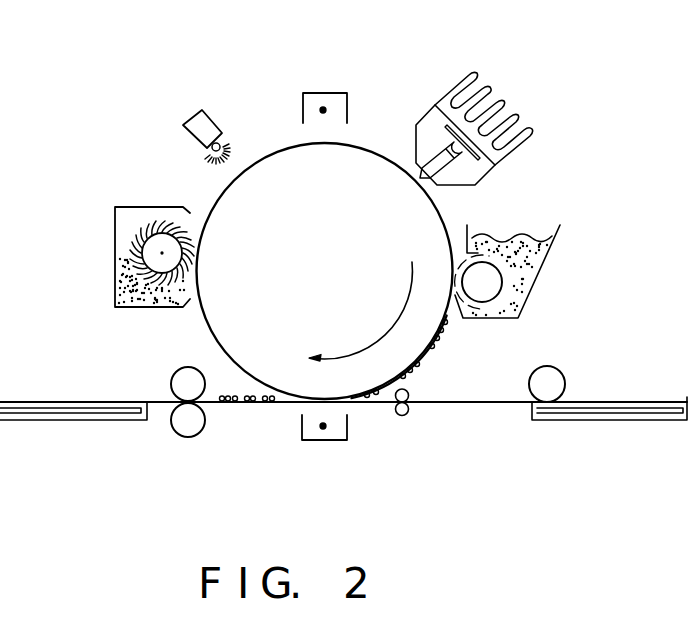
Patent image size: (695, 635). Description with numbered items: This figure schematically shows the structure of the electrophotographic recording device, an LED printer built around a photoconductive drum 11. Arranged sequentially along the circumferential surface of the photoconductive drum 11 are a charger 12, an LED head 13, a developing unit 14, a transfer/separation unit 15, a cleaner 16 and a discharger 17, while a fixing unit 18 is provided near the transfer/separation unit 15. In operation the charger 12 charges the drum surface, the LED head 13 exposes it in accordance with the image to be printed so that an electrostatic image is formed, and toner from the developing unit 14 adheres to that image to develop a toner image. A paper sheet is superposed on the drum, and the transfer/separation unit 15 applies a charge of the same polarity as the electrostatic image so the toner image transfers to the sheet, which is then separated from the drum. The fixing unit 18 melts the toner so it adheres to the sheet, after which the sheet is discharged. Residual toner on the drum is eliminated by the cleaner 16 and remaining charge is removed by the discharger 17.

The photoconductive drum 11 is at (379, 154).
The charger 12 is at (331, 93).
The LED head 13 is at (510, 97).
The developing unit 14 is at (540, 272).
The transfer/separation unit 15 is at (347, 440).
The cleaner 16 is at (115, 278).
The discharger 17 is at (183, 137).
The fixing unit 18 is at (188, 437).